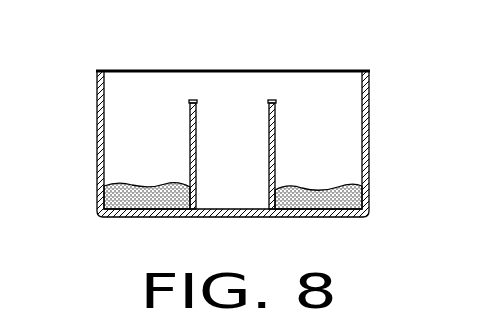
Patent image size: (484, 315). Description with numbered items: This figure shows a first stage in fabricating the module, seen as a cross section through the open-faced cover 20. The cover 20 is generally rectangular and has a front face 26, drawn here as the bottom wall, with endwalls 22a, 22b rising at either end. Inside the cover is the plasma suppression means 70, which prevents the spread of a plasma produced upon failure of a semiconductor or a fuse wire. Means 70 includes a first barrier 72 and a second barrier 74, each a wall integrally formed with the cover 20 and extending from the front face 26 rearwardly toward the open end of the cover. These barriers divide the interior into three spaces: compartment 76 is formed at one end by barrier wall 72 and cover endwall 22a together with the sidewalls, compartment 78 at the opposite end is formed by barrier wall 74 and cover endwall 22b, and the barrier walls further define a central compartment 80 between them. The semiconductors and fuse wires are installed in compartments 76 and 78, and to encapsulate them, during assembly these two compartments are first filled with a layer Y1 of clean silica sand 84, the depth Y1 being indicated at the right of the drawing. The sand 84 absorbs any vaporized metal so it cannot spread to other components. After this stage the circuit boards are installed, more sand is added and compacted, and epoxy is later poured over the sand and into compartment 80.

The cover 20 is at (137, 231).
The cover endwall 22a is at (96, 105).
The cover endwall 22b is at (370, 112).
The front face 26 is at (200, 218).
The plasma suppression means 70 is at (243, 60).
The first barrier 72 is at (192, 100).
The second barrier 74 is at (272, 100).
The compartment 76 is at (157, 148).
The compartment 78 is at (335, 148).
The central compartment 80 is at (246, 148).
The sand 84 is at (100, 207).
The layer of sand Y1 is at (391, 158).